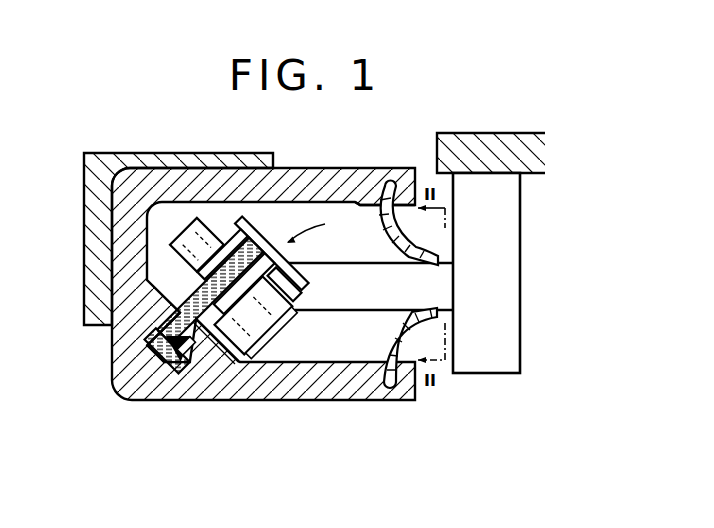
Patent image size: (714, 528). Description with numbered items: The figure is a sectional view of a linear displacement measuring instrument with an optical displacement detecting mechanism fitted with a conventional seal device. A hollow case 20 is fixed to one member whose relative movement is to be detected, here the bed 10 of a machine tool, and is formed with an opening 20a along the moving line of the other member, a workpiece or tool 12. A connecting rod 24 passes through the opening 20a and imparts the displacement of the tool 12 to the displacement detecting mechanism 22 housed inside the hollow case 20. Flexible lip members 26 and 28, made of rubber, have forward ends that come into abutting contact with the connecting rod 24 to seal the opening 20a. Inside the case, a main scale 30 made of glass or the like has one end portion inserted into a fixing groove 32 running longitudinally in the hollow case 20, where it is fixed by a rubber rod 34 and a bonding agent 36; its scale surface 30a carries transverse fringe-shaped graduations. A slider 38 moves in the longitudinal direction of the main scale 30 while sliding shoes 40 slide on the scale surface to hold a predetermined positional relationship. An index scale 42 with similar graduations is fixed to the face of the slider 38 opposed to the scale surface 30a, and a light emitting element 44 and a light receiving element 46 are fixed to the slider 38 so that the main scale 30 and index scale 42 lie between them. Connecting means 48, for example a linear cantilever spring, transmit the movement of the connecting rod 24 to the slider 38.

The bed 10 is at (273, 166).
The tool 12 is at (533, 175).
The hollow case 20 is at (345, 168).
The opening 20a is at (438, 234).
The displacement detecting mechanism 22 is at (350, 232).
The connecting rod 24 is at (293, 264).
The flexible lip member 26 is at (389, 240).
The flexible lip member 28 is at (389, 343).
The main scale 30 is at (160, 340).
The scale surface 30a is at (238, 362).
The fixing groove 32 is at (150, 344).
The rubber rod 34 is at (180, 360).
The bonding agent 36 is at (192, 362).
The slider 38 is at (300, 305).
The sliding shoes 40 is at (251, 235).
The index scale 42 is at (205, 290).
The light emitting element 44 is at (189, 229).
The light receiving element 46 is at (292, 332).
The connecting means 48 is at (258, 346).